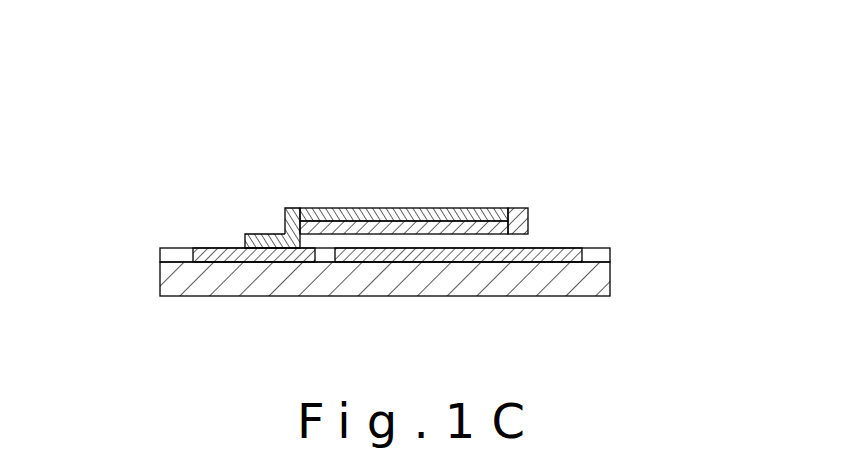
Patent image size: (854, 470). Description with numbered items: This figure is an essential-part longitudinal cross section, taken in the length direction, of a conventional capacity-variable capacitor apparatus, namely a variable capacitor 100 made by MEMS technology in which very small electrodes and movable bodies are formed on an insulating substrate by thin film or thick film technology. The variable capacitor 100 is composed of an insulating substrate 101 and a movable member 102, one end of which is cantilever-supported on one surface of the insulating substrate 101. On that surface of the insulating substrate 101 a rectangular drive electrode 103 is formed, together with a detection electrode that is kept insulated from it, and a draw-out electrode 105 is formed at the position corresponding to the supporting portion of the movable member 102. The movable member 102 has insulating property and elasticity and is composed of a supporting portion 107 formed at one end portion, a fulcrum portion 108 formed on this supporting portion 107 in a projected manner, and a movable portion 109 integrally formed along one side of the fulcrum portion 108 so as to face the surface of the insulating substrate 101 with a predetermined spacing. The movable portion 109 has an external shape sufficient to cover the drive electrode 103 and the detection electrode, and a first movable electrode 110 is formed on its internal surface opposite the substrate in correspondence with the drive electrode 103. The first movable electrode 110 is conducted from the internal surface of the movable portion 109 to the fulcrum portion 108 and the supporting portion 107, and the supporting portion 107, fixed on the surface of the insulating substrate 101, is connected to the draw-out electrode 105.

The variable capacitor 100 is at (160, 272).
The insulating substrate 101 is at (598, 276).
The movable member 102 is at (447, 132).
The drive electrode 103 is at (476, 264).
The draw-out electrode 105 is at (228, 264).
The supporting portion 107 is at (252, 234).
The fulcrum portion 108 is at (288, 208).
The movable portion 109 is at (408, 208).
The first movable electrode 110 is at (512, 208).